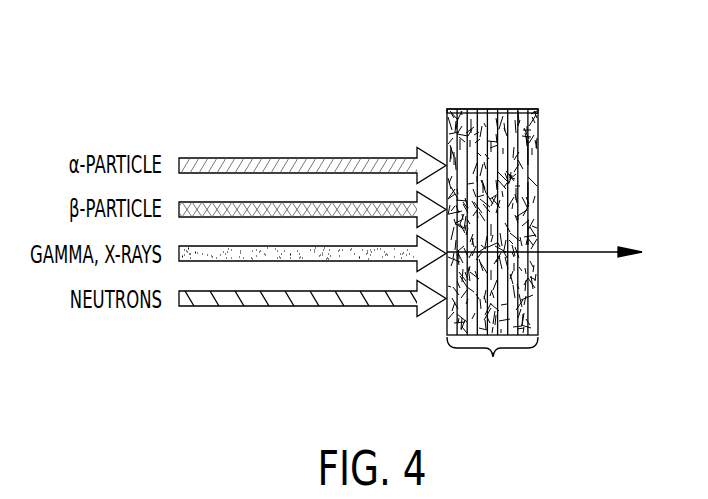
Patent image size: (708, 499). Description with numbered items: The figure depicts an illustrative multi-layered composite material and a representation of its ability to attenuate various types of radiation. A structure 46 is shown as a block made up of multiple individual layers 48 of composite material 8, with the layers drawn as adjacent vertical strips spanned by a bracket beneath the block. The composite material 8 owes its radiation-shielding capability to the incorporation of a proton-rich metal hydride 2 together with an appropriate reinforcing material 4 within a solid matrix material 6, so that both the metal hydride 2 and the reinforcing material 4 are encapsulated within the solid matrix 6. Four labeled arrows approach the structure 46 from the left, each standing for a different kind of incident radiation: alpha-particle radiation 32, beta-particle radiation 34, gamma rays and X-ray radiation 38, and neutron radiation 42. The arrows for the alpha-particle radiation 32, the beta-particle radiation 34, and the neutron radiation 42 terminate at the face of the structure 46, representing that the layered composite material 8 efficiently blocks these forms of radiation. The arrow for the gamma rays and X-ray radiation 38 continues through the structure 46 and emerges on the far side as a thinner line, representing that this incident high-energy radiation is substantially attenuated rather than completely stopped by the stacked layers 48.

The structure 46 is at (598, 101).
The composite material 8 is at (532, 109).
The proton-rich metal hydride 2 is at (540, 153).
The reinforcing material 4 is at (540, 195).
The solid matrix material 6 is at (540, 233).
The individual layers 48 is at (492, 367).
The alpha-particle radiation 32 is at (221, 158).
The beta-particle radiation 34 is at (295, 201).
The gamma rays and X-ray radiation 38 is at (225, 262).
The neutron radiation 42 is at (353, 307).